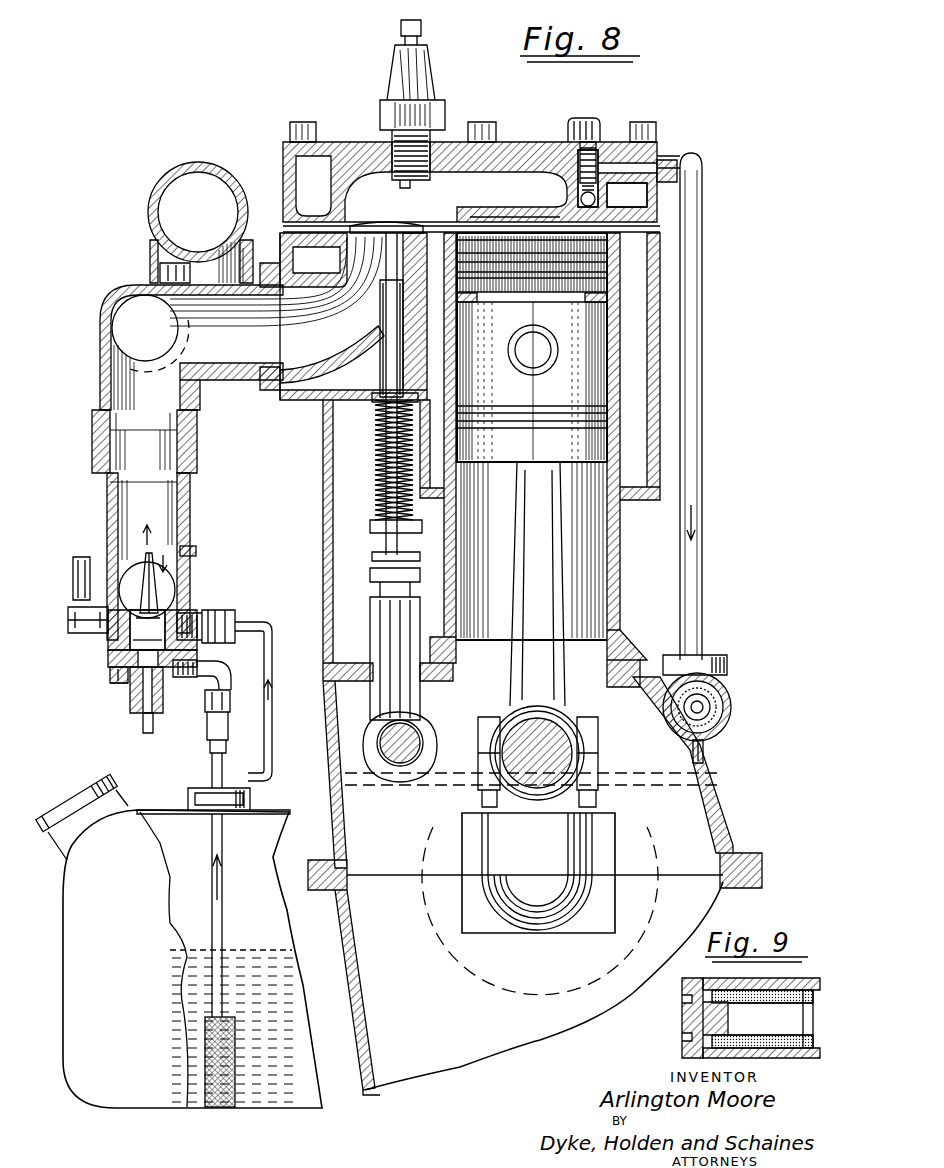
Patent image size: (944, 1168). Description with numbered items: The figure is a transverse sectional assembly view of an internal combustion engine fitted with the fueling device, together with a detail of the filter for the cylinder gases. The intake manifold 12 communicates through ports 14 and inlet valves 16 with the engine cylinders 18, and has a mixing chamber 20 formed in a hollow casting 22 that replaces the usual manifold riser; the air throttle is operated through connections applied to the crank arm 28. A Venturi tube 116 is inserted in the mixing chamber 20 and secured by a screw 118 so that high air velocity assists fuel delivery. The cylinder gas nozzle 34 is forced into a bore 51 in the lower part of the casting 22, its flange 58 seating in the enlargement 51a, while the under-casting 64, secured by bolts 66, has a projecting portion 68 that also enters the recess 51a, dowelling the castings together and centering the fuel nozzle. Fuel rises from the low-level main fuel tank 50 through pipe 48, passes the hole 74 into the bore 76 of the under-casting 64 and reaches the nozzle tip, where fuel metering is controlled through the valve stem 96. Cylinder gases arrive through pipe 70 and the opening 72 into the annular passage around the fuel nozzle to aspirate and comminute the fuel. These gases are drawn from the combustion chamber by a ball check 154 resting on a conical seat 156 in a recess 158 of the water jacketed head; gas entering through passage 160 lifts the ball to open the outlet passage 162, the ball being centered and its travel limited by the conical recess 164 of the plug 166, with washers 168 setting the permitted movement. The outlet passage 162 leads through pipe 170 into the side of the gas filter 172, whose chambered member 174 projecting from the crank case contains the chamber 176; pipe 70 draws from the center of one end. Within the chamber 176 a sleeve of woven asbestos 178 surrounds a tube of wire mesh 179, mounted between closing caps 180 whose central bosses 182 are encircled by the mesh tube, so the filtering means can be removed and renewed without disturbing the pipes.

In FIG. 8, the intake manifold 12 is at (224, 365).
In FIG. 8, the ports 14 is at (312, 348).
In FIG. 8, the inlet valves 16 is at (392, 232).
In FIG. 8, the engine cylinders 18 is at (608, 327).
In FIG. 8, the mixing chamber 20 is at (197, 452).
In FIG. 8, the hollow casting 22 is at (196, 468).
In FIG. 8, the crank arm 28 is at (72, 585).
In FIG. 8, the cylinder gas nozzle 34 is at (160, 585).
In FIG. 8, the pipe 48 is at (210, 730).
In FIG. 8, the main fuel tank 50 is at (256, 812).
In FIG. 8, the bore 51 is at (110, 640).
In FIG. 8, the enlargement (recess) 51a is at (120, 646).
In FIG. 8, the flange 58 is at (113, 628).
In FIG. 8, the under-casting 64 is at (110, 672).
In FIG. 8, the bolts 66 is at (112, 682).
In FIG. 8, the projecting portion 68 is at (120, 674).
In FIG. 8, the pipe 70 is at (266, 630).
In FIG. 8, the opening 72 is at (178, 598).
In FIG. 8, the hole 74 is at (164, 690).
In FIG. 8, the bore 76 is at (133, 700).
In FIG. 8, the valve stem 96 is at (186, 659).
In FIG. 8, the Venturi tube 116 is at (186, 516).
In FIG. 8, the screw 118 is at (197, 550).
In FIG. 8, the ball check 154 is at (578, 196).
In FIG. 8, the conical seat 156 is at (579, 205).
In FIG. 8, the recess 158 is at (604, 198).
In FIG. 8, the passage 160 is at (545, 216).
In FIG. 8, the outlet passage 162 is at (654, 150).
In FIG. 8, the conical recess 164 is at (576, 178).
In FIG. 8, the centering and movement limiting plug 166 is at (590, 119).
In FIG. 8, the washers 168 is at (578, 143).
In FIG. 8, the pipe 170 is at (702, 226).
In FIG. 8, the gas filter 172 is at (735, 693).
In FIG. 8, the chambered member 174 is at (727, 729).
In FIG. 8, the chamber 176 is at (731, 711).
In FIG. 9, the chamber 176 is at (757, 1050).
In FIG. 8, the sleeve of woven asbestos 178 is at (727, 666).
In FIG. 9, the sleeve of woven asbestos 178 is at (735, 997).
In FIG. 9, the tube of wire mesh material 179 is at (776, 997).
In FIG. 9, the closing caps 180 is at (683, 1021).
In FIG. 9, the bosses 182 is at (733, 1018).